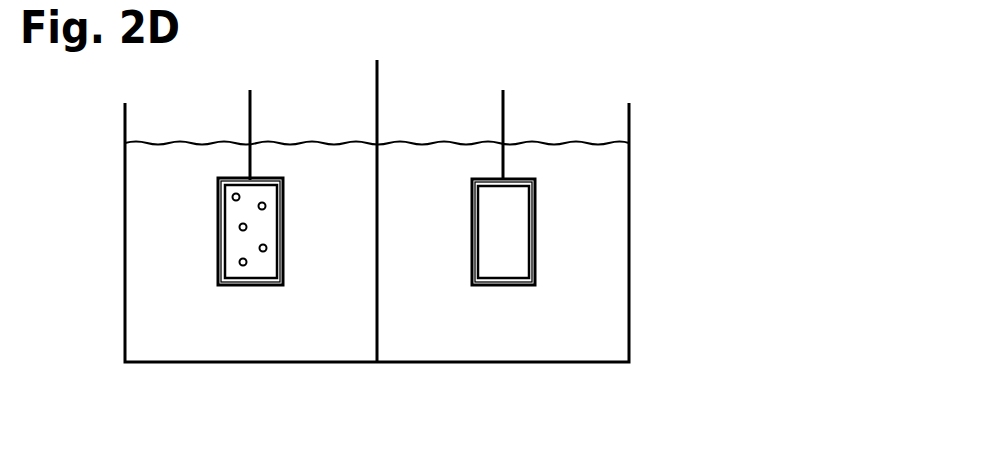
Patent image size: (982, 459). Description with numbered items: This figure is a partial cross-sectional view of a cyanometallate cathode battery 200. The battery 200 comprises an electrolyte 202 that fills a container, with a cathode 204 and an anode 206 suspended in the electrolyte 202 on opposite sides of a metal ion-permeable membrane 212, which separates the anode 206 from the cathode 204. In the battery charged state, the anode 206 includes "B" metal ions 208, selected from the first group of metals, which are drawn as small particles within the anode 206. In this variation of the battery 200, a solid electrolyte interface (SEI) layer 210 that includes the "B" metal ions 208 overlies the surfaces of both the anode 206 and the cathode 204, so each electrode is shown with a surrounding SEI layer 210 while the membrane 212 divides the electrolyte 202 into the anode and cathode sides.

The battery 200 is at (650, 233).
The electrolyte 202 is at (275, 348).
The cathode 204 is at (546, 119).
The anode 206 is at (291, 119).
The "B" metal ions 208 is at (234, 194).
The solid electrolyte interface (SEI) layer 210 is at (575, 208).
The metal ion-permeable membrane 212 is at (379, 337).